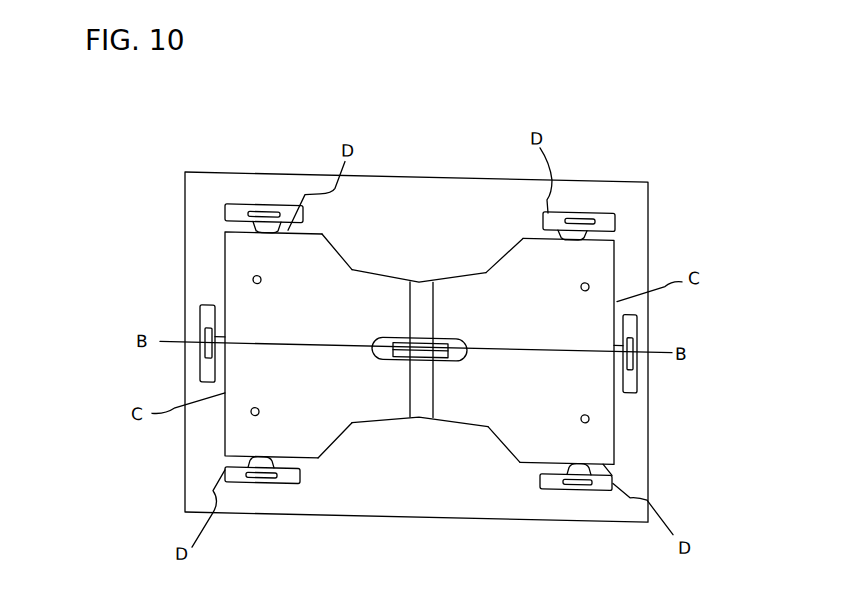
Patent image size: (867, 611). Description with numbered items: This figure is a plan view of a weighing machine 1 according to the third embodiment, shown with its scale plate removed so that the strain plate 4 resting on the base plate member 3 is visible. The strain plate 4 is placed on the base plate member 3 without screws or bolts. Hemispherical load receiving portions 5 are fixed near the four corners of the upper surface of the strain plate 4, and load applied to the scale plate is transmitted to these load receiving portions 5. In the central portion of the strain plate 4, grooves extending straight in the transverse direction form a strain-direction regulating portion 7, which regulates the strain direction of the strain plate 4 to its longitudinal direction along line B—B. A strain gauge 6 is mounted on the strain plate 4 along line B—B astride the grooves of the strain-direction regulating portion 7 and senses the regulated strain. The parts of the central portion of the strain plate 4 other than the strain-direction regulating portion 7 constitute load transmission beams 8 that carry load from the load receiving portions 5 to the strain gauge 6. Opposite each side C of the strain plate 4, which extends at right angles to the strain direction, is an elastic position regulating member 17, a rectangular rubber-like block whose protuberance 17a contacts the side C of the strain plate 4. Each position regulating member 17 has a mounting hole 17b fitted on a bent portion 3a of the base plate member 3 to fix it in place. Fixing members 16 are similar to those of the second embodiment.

The weighing machine 1 is at (400, 165).
The base plate member 3 is at (593, 181).
The bent portion 3a is at (273, 205).
The strain plate 4 is at (383, 267).
The load receiving portions 5 is at (261, 279).
The strain gauge 6 is at (397, 356).
The strain-direction regulating portion 7 is at (428, 412).
The load transmission beams 8 is at (323, 315).
The fixing members 16 is at (226, 211).
The position regulating member 17 is at (202, 312).
The protuberance 17a is at (213, 352).
The mounting hole 17b is at (202, 332).